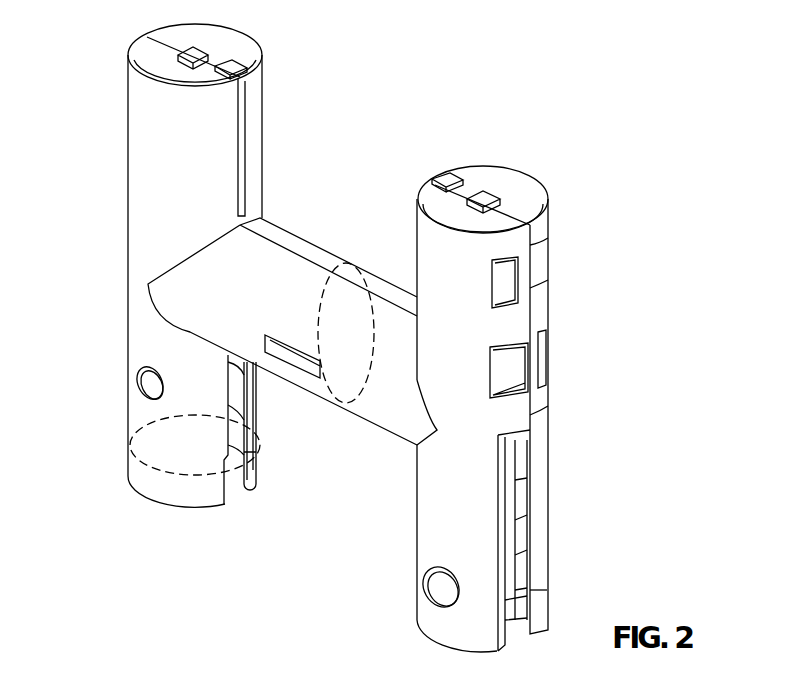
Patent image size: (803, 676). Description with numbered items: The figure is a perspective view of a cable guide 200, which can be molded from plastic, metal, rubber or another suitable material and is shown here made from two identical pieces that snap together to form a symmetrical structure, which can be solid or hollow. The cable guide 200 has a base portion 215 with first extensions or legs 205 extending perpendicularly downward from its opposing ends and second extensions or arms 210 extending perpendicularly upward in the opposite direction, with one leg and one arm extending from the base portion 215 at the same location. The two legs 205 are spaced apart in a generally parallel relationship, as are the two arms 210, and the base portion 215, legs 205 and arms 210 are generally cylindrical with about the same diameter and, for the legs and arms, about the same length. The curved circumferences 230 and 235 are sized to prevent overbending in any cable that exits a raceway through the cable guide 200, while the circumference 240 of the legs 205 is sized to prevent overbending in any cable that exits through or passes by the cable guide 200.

The cable guide 200 is at (521, 66).
The circumference 230 is at (135, 36).
The circumference of legs 240 is at (140, 431).
The base portion 215 is at (304, 248).
The circumference 235 is at (330, 400).
The arms 210 is at (543, 187).
The legs 205 is at (543, 497).